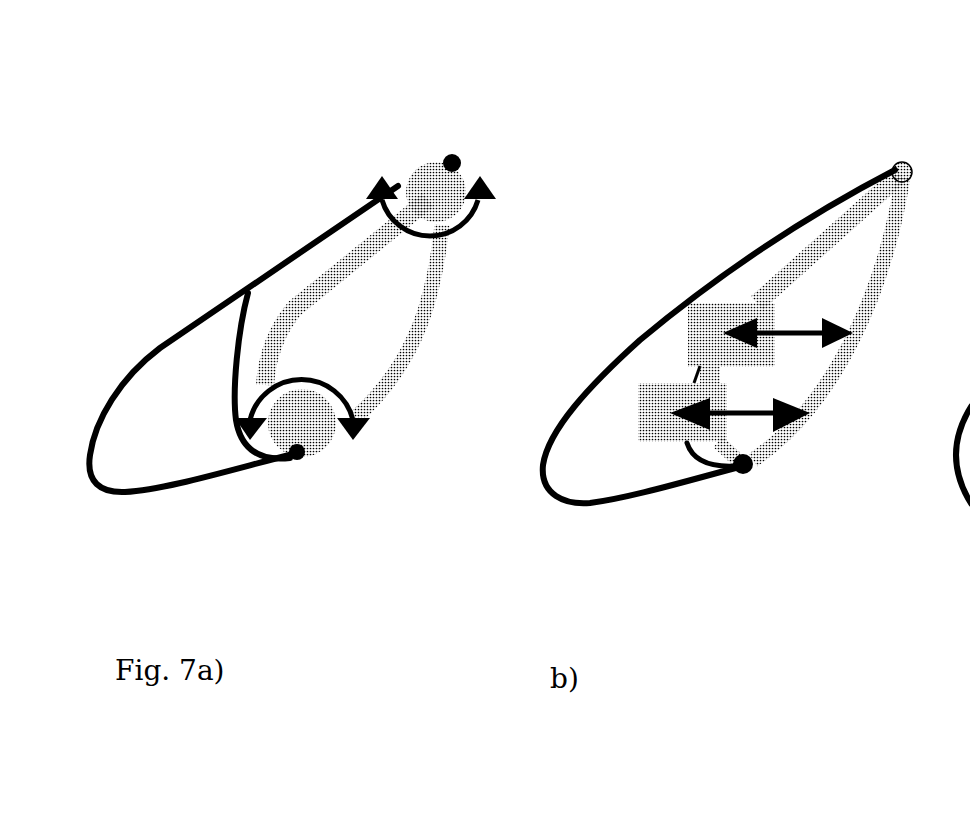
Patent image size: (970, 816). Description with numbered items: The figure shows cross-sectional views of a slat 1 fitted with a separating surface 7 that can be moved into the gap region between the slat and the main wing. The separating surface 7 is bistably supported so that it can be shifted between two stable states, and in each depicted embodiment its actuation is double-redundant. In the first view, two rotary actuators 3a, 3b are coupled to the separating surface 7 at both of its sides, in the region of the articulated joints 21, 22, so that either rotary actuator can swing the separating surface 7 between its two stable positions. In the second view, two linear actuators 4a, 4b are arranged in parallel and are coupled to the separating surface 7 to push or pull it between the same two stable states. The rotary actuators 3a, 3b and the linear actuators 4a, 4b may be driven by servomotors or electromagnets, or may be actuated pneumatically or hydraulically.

In FIG. 7a, the slat 1 is at (160, 357).
In FIG. 7b, the slat 1 is at (627, 350).
In FIG. 7a, the separating surface 7 is at (313, 297).
In FIG. 7b, the separating surface 7 is at (810, 257).
In FIG. 7a, the rotary actuator 3a is at (317, 433).
In FIG. 7a, the rotary actuator 3b is at (427, 183).
In FIG. 7b, the linear actuator 4a is at (647, 408).
In FIG. 7b, the linear actuator 4b is at (690, 310).
In FIG. 7a, the articulated joint 21 is at (300, 455).
In FIG. 7b, the articulated joint 21 is at (753, 467).
In FIG. 7a, the articulated joint 22 is at (461, 163).
In FIG. 7b, the articulated joint 22 is at (912, 173).